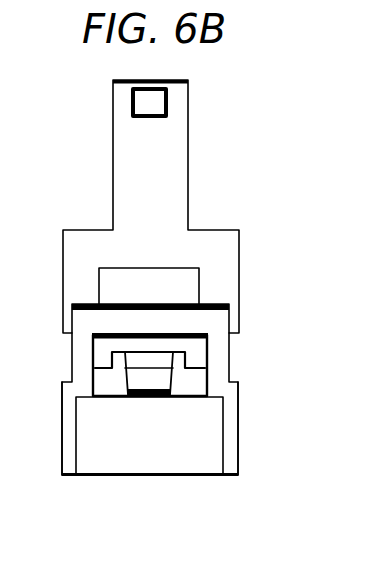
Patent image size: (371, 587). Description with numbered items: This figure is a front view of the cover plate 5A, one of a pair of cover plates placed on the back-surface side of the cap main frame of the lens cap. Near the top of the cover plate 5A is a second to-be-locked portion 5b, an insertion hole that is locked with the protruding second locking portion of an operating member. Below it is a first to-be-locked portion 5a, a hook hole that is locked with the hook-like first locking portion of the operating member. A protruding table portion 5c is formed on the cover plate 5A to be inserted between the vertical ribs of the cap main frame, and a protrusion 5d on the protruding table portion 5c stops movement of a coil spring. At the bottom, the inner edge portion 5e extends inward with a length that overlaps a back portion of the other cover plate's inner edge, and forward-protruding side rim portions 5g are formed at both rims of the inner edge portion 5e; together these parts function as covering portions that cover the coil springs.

The cover plate 5A is at (188, 158).
The first to-be-locked portion 5a is at (187, 281).
The second to-be-locked portion 5b is at (167, 99).
The protruding table portion 5c is at (197, 354).
The protrusion 5d is at (163, 377).
The inner edge portion 5e is at (163, 458).
The side rim portion 5g is at (68, 458).